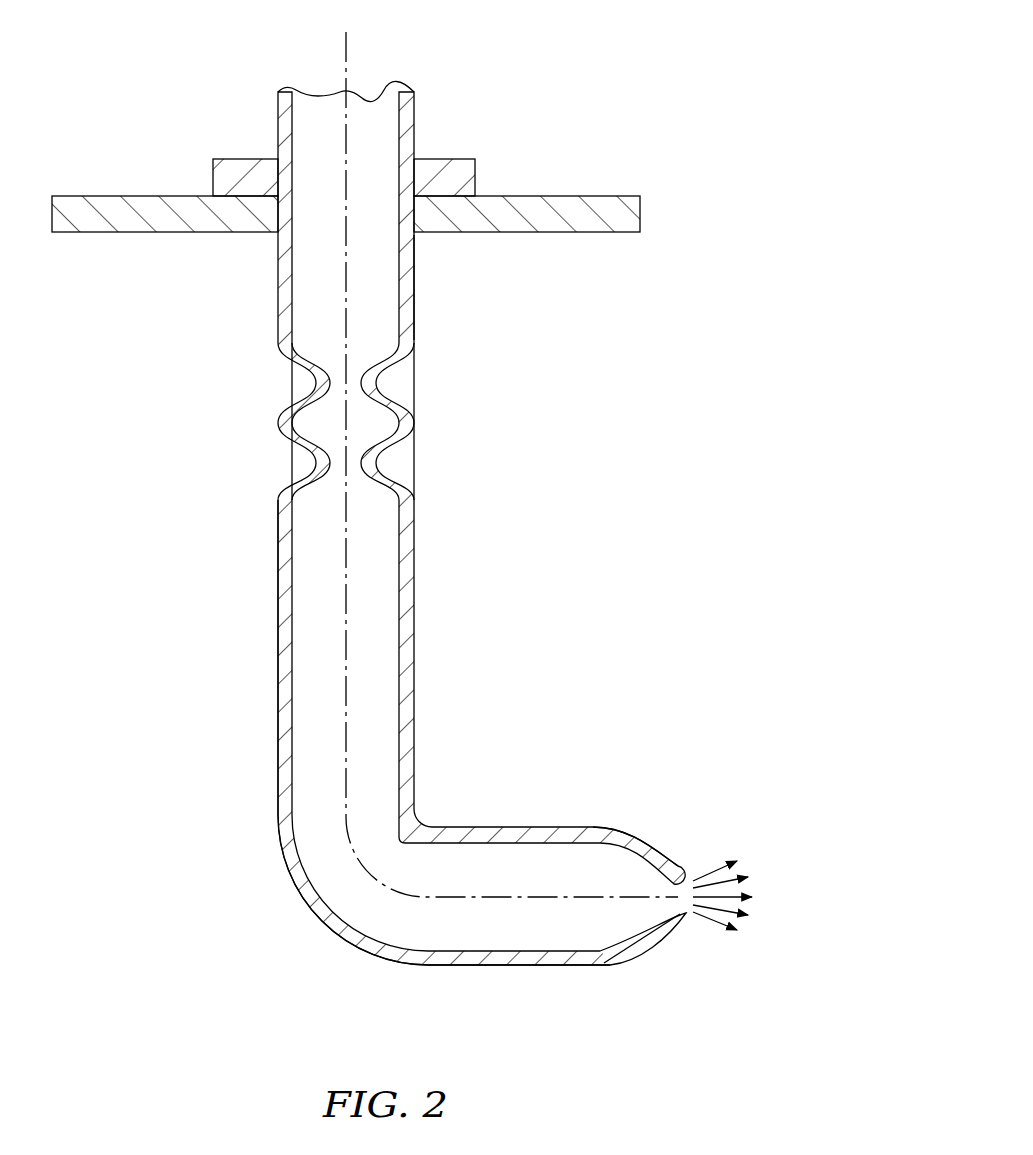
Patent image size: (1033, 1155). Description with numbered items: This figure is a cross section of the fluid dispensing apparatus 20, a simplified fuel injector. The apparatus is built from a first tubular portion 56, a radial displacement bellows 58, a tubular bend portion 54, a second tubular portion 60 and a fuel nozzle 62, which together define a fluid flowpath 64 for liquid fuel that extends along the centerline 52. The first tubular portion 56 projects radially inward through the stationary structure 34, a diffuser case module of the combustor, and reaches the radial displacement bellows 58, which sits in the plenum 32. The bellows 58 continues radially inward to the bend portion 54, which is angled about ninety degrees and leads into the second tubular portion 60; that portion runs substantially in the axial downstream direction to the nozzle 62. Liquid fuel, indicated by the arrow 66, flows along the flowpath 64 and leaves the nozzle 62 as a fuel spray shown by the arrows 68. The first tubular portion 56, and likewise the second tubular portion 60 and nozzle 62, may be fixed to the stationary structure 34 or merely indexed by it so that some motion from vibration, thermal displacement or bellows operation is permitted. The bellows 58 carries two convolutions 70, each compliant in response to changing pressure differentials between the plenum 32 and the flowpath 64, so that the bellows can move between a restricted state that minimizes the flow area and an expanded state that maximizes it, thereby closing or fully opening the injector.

The fluid dispensing apparatus 20 is at (632, 73).
The plenum 32 is at (164, 488).
The stationary structure 34 is at (555, 196).
The centerline 52 is at (352, 725).
The tubular bend portion 54 is at (300, 896).
The first tubular portion 56 is at (414, 258).
The radial displacement bellows 58 is at (438, 337).
The second tubular portion 60 is at (537, 967).
The fuel nozzle 62 is at (652, 845).
The fluid flowpath 64 is at (318, 668).
The arrow 66 is at (372, 286).
The arrows 68 is at (708, 913).
The convolutions 70 is at (270, 452).